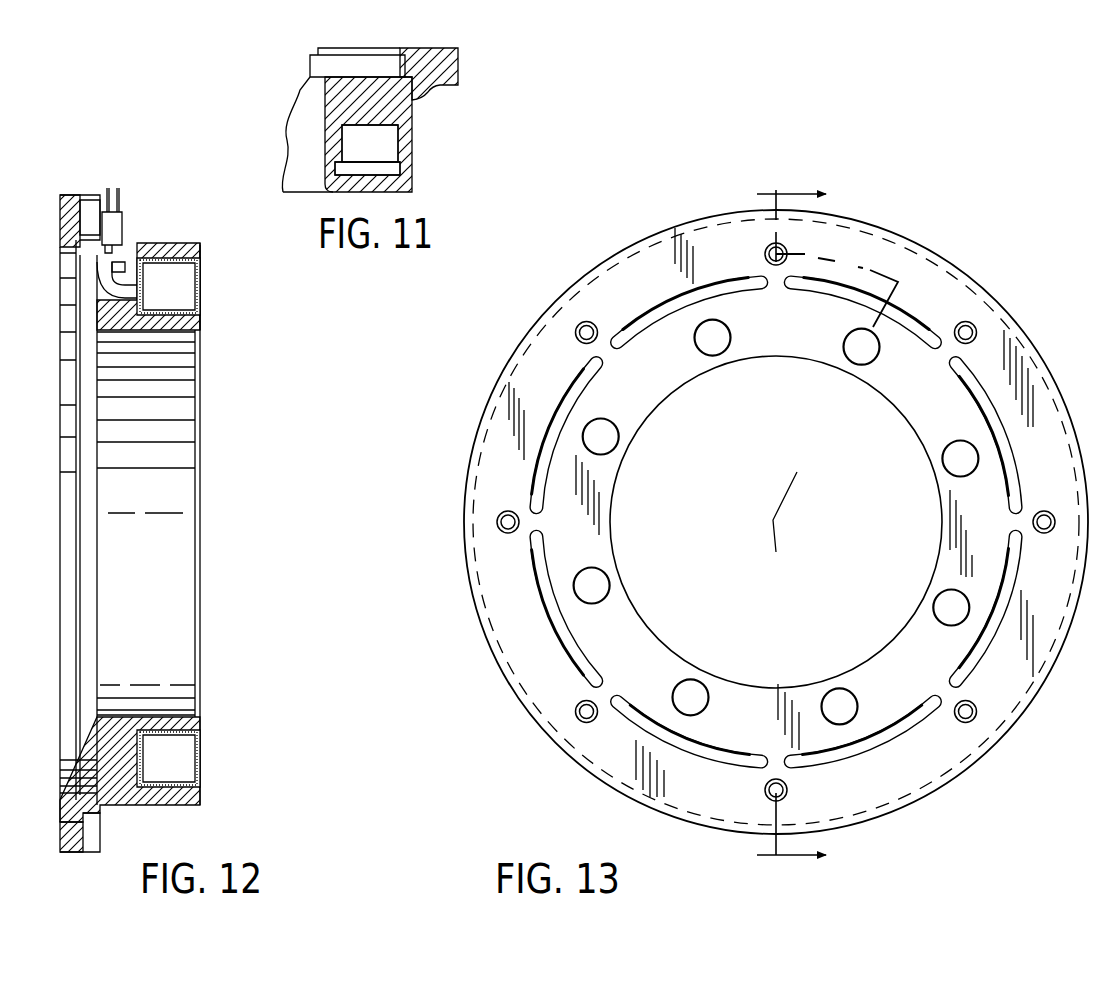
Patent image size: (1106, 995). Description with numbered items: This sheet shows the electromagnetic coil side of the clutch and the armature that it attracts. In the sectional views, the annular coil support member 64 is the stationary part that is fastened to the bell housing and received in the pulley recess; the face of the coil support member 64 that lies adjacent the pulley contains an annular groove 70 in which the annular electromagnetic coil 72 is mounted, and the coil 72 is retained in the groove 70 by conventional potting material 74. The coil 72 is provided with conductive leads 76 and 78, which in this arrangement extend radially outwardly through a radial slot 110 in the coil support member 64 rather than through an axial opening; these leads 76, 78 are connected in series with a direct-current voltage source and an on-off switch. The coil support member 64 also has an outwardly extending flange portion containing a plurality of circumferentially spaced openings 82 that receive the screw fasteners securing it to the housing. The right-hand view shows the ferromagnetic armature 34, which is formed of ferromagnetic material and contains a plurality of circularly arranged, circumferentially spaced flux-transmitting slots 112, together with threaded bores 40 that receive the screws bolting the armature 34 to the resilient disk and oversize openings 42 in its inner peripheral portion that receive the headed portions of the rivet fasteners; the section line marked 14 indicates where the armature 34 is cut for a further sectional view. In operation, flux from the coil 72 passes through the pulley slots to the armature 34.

In FIG. 13, the ferromagnetic armature 34 is at (852, 232).
In FIG. 13, the threaded bores 40 is at (968, 330).
In FIG. 13, the oversize openings 42 is at (712, 337).
In FIG. 11, the coil support member 64 is at (462, 62).
In FIG. 12, the coil support member 64 is at (180, 583).
In FIG. 11, the annular groove 70 is at (378, 148).
In FIG. 12, the electromagnetic coil 72 is at (185, 760).
In FIG. 12, the potting material 74 is at (178, 300).
In FIG. 12, the conductive lead 76 is at (107, 195).
In FIG. 12, the conductive lead 78 is at (119, 195).
In FIG. 12, the circumferentially spaced openings 82 is at (62, 215).
In FIG. 12, the radial slot 110 is at (122, 270).
In FIG. 13, the flux-transmitting slots 112 is at (915, 326).
In FIG. 13, the section line 14- 14 is at (804, 529).